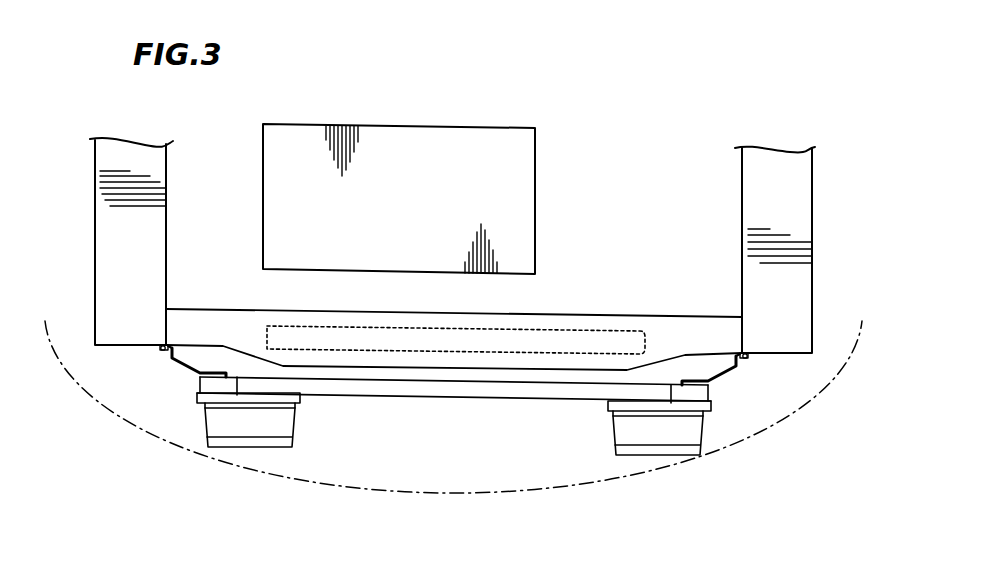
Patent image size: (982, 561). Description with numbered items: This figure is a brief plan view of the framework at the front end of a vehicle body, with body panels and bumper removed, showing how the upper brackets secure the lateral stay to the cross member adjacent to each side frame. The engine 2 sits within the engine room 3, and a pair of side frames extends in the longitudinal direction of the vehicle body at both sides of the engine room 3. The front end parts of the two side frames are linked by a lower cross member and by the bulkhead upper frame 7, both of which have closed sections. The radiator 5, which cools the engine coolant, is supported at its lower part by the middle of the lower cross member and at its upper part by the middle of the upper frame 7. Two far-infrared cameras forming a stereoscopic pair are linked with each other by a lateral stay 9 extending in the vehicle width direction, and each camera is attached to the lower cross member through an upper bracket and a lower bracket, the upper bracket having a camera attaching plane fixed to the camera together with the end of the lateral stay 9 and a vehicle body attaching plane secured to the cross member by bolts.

The engine 2 is at (535, 188).
The engine room 3 is at (649, 169).
The radiator 5 is at (447, 352).
The bulkhead upper frame 7 is at (676, 320).
The lateral stay 9 is at (532, 396).